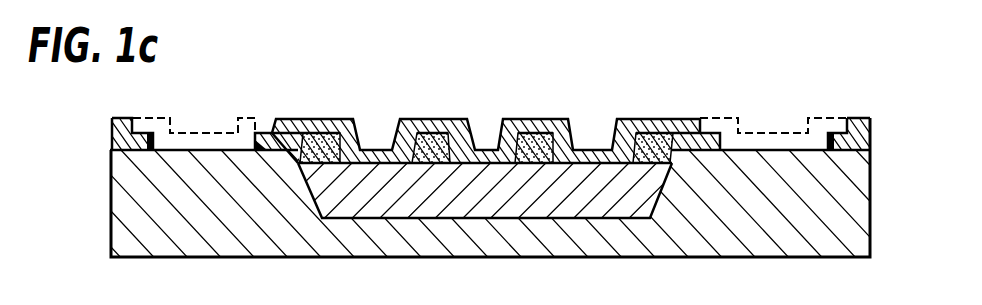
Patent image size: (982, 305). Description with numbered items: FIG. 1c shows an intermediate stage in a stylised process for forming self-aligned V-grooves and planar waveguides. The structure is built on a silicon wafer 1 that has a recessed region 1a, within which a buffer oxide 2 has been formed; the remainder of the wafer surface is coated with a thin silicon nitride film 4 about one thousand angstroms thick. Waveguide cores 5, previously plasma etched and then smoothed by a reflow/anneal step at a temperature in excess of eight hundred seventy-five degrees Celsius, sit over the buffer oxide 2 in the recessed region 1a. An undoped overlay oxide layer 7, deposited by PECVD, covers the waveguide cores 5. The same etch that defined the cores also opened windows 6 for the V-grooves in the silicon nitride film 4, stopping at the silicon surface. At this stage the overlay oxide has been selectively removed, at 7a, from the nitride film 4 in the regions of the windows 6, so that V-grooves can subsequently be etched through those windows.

The silicon wafer 1 is at (308, 235).
The recessed region 1a is at (660, 197).
The buffer oxide 2 is at (548, 207).
The silicon nitride film 4 is at (260, 134).
The waveguide cores 5 is at (522, 132).
The windows 6 is at (186, 137).
The overlay oxide layer 7 is at (317, 120).
The selectively removed overlay oxide 7a is at (247, 127).